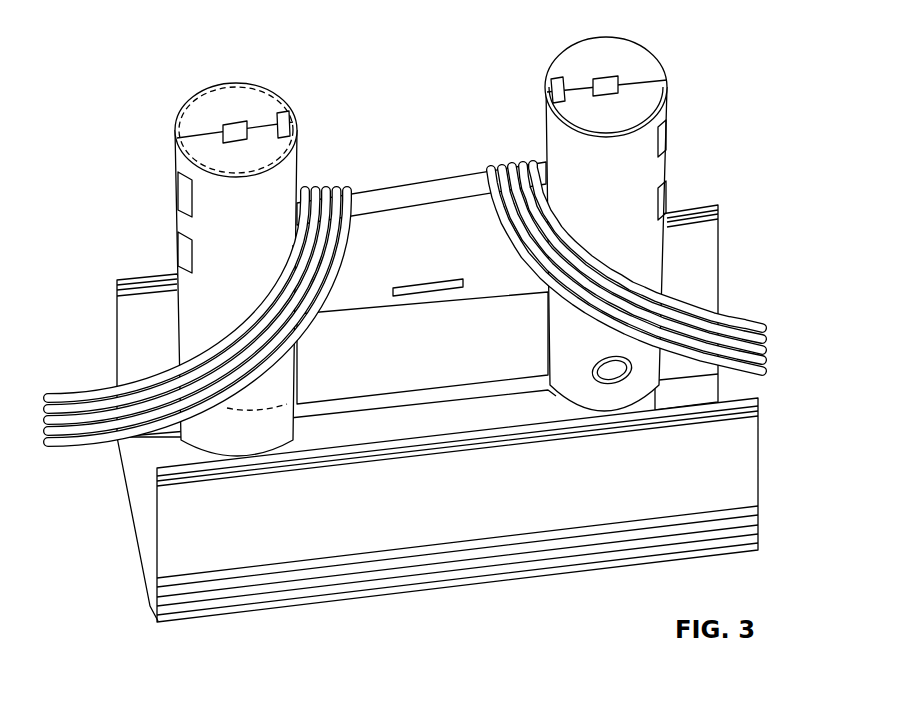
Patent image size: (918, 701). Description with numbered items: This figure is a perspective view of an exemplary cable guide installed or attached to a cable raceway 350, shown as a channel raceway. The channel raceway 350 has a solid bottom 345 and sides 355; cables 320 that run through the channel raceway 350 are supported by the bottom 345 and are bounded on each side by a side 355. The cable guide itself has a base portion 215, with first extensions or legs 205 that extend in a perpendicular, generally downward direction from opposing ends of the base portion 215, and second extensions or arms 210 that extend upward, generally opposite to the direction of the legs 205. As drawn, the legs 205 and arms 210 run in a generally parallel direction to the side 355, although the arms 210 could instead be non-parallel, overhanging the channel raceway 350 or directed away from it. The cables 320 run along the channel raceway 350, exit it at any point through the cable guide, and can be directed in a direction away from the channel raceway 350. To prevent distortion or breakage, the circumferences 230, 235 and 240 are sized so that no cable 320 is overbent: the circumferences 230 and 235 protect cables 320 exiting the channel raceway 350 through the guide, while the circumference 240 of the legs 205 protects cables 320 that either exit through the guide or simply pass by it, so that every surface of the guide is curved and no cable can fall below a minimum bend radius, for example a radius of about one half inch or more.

The legs 205 is at (643, 283).
The arms 210 is at (664, 86).
The base portion 215 is at (357, 190).
The circumference 230 is at (180, 117).
The circumference 235 is at (293, 247).
The circumference of legs 240 is at (293, 368).
The cables 320 is at (398, 368).
The bottom 345 is at (593, 498).
The cable raceway 350 is at (703, 395).
The sides 355 is at (720, 218).